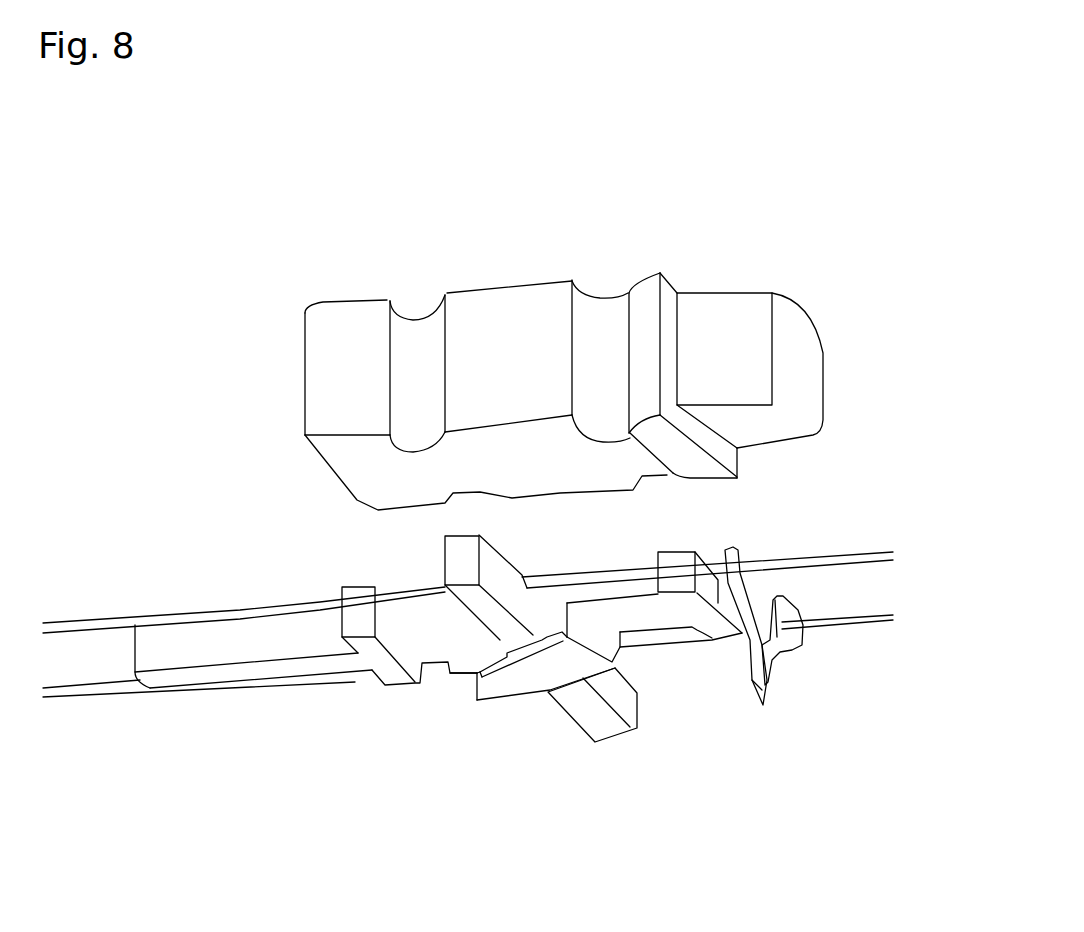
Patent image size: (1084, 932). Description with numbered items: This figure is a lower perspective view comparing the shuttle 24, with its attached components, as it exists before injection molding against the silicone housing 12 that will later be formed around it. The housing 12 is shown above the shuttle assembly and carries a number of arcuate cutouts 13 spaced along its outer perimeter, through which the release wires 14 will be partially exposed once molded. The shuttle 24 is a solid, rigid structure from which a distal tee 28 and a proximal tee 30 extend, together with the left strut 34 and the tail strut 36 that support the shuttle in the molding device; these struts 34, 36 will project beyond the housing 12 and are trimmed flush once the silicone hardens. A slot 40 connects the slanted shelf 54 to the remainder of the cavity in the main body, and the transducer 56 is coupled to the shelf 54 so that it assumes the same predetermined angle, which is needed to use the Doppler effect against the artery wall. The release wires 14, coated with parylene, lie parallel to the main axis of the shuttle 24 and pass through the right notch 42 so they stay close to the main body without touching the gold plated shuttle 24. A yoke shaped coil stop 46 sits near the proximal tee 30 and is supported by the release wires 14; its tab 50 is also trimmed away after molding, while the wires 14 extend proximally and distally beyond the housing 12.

The housing 12 is at (564, 343).
The arcuate cutouts 13 is at (423, 337).
The release wires 14 is at (62, 623).
The shuttle 24 is at (468, 702).
The distal tee 28 is at (395, 678).
The proximal tee 30 is at (677, 553).
The left strut 34 is at (620, 740).
The tail strut 36 is at (458, 558).
The slot 40 is at (605, 633).
The right notch 42 is at (550, 617).
The coil stop 46 is at (783, 645).
The tab 50 is at (770, 690).
The slanted shelf 54 is at (473, 672).
The transducer 56 is at (522, 685).